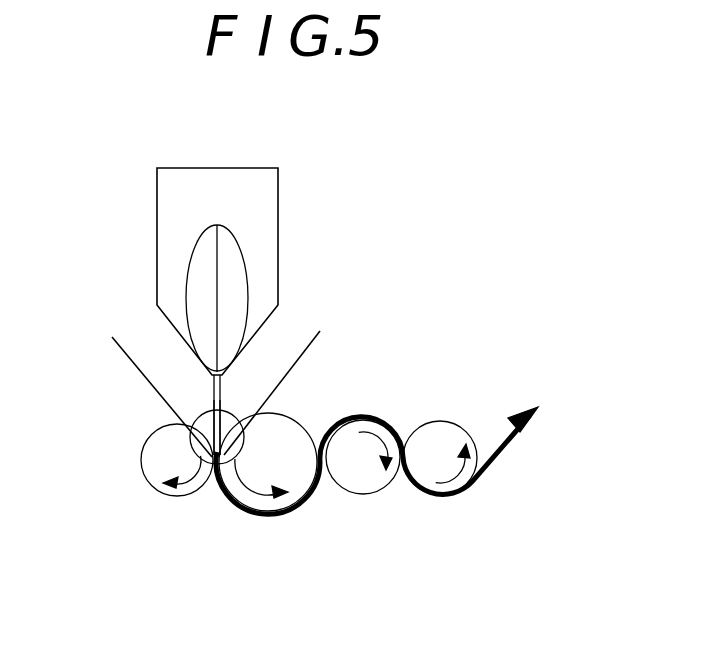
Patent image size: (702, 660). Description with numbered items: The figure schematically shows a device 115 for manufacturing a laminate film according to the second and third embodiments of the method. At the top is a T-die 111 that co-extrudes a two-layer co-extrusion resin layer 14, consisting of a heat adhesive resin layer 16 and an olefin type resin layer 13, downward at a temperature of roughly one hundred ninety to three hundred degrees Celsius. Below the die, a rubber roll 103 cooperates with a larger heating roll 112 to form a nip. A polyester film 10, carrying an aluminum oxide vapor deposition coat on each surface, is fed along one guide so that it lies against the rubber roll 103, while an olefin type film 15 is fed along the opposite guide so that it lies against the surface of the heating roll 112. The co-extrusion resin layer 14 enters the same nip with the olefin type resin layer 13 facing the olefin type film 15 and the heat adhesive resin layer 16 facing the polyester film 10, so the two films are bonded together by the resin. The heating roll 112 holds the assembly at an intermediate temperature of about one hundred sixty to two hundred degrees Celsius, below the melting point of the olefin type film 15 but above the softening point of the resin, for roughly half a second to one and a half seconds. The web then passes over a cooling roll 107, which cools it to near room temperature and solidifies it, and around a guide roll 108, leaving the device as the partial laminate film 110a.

The polyester film 10 is at (130, 352).
The olefin type resin layer 13 is at (242, 452).
The co-extrusion resin layer 14 is at (240, 580).
The olefin type film 15 is at (303, 350).
The heat adhesive resin layer 16 is at (190, 460).
The rubber roll 103 is at (157, 468).
The cooling roll 107 is at (365, 480).
The guide roll 108 is at (448, 448).
The partial laminate film 110a is at (502, 455).
The T-die 111 is at (207, 185).
The heating roll 112 is at (292, 435).
The device for manufacturing the laminate film 115 is at (300, 170).